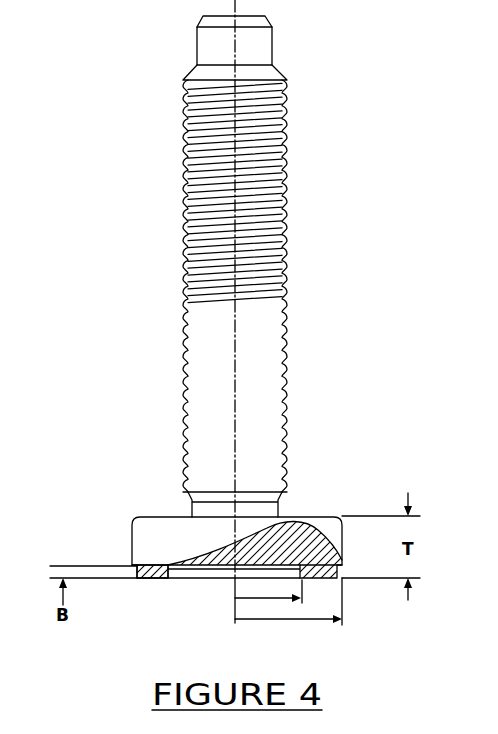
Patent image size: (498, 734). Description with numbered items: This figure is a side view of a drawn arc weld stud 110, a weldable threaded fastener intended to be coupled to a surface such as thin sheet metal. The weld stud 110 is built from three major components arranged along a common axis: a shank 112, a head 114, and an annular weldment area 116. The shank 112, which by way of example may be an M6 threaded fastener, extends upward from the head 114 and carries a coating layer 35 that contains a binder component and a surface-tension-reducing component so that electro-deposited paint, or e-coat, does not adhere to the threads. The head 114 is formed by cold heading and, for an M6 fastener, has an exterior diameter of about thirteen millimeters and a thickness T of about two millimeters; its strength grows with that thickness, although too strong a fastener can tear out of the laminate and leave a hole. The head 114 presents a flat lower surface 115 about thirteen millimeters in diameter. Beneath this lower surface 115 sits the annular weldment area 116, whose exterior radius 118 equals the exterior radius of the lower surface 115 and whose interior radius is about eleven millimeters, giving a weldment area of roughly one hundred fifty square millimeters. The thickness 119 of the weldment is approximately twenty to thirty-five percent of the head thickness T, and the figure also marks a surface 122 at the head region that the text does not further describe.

The drawn arc weld stud 110 is at (219, 335).
The shank 112 is at (229, 298).
The coating layer 35 is at (287, 273).
The head 114 is at (219, 557).
The flat lower surface 115 is at (190, 578).
The annular weldment area 116 is at (160, 575).
The exterior radius 118 is at (316, 620).
The thickness of the weldment 119 is at (63, 560).
The cam surface 122 is at (332, 580).